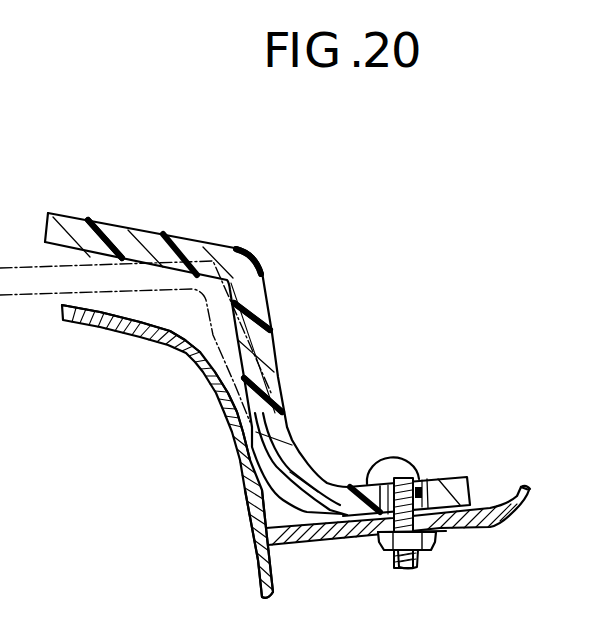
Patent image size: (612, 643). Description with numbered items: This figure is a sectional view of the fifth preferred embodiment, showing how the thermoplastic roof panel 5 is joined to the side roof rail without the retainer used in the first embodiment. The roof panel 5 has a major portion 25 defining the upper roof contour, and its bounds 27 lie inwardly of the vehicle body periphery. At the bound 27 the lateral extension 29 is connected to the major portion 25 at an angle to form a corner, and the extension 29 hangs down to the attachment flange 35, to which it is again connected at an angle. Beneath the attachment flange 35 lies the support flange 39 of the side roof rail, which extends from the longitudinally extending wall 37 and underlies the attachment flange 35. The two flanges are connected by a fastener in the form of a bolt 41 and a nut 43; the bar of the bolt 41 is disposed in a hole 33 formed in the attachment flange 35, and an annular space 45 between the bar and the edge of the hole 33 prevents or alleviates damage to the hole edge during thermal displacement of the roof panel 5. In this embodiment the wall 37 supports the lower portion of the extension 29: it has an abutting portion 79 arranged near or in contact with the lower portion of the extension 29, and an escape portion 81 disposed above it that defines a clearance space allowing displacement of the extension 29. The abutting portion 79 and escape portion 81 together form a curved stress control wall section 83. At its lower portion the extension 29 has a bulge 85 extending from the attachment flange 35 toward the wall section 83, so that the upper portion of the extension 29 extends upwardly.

The roof panel 5 is at (97, 214).
The major portion 25 is at (177, 238).
The bounds 27 is at (253, 262).
The lateral extension 29 is at (267, 320).
The bulge 85 is at (281, 414).
The curved stress control wall section 83 is at (133, 388).
The escape portion 81 is at (192, 346).
The abutting portion 79 is at (235, 411).
The wall 37 is at (247, 522).
The support flange 39 is at (507, 537).
The attachment flange 35 is at (453, 480).
The hole 33 is at (420, 487).
The bolt 41 is at (390, 470).
The nut 43 is at (387, 552).
The annular space 45 is at (446, 533).